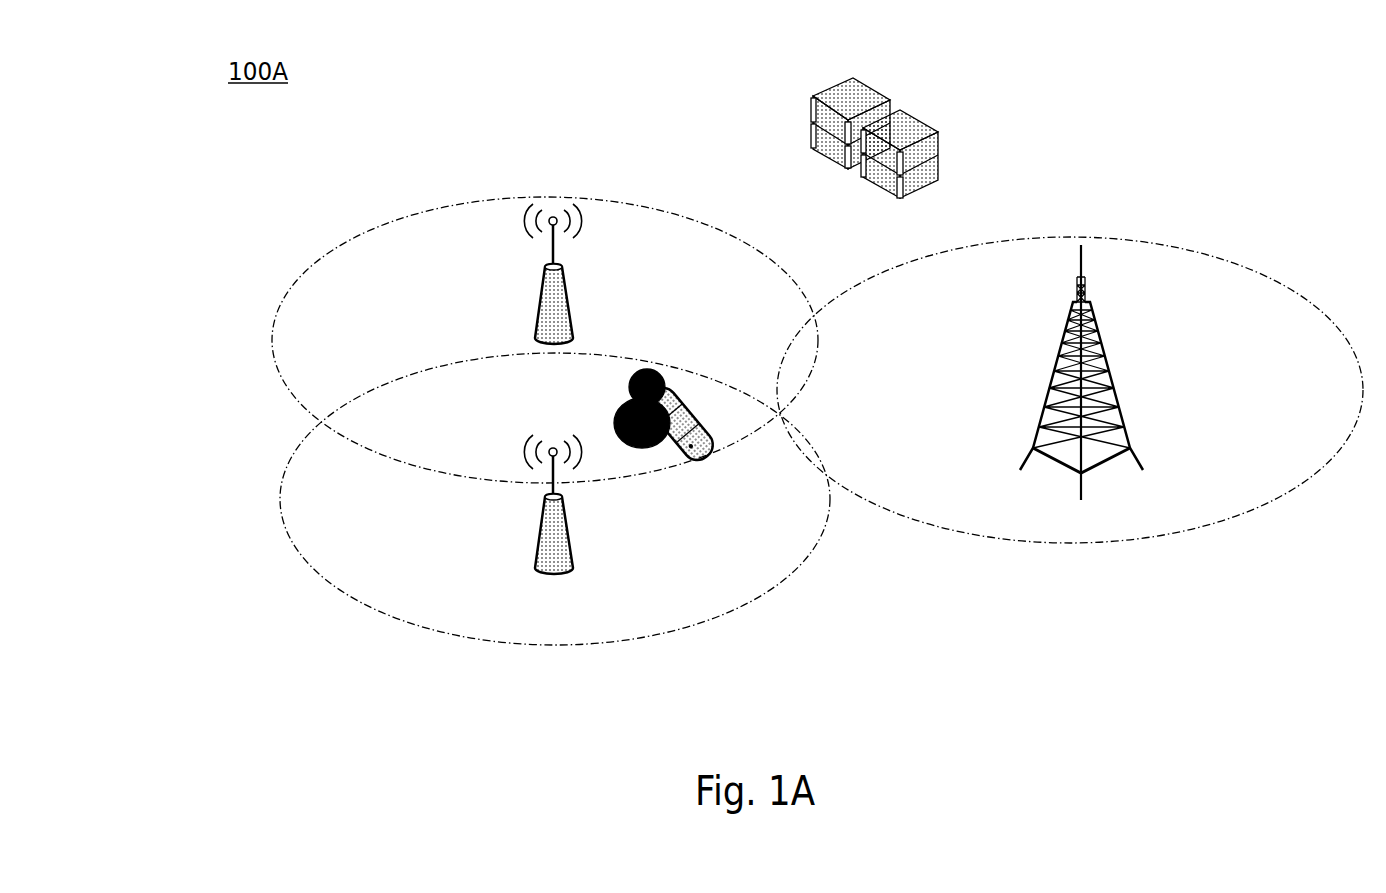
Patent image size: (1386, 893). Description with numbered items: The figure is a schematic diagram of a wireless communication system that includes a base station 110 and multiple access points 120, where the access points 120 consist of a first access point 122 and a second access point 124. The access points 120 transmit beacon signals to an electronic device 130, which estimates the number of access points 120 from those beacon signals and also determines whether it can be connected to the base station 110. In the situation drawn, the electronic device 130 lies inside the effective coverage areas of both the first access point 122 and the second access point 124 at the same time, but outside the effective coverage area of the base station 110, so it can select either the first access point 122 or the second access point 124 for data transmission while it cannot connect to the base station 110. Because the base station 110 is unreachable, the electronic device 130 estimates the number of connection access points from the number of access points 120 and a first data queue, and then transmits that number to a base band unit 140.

The base station 110 is at (1104, 368).
The access points 120 is at (180, 388).
The first access point 122 is at (537, 313).
The second access point 124 is at (540, 527).
The electronic device 130 is at (692, 447).
The base band unit 140 is at (910, 110).